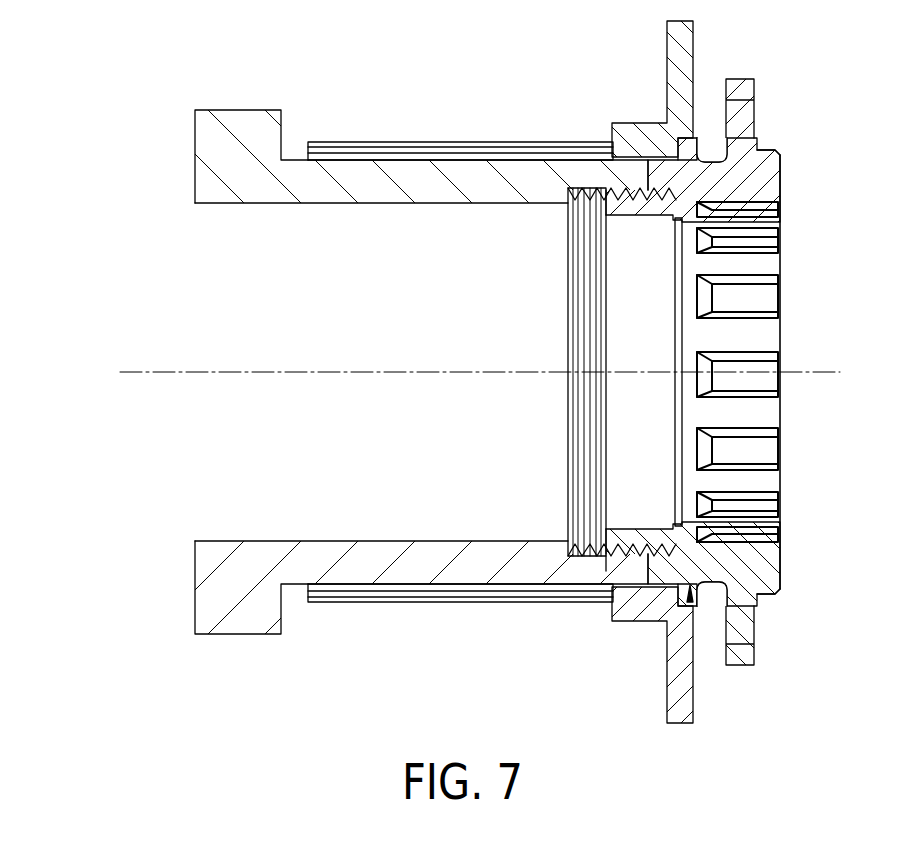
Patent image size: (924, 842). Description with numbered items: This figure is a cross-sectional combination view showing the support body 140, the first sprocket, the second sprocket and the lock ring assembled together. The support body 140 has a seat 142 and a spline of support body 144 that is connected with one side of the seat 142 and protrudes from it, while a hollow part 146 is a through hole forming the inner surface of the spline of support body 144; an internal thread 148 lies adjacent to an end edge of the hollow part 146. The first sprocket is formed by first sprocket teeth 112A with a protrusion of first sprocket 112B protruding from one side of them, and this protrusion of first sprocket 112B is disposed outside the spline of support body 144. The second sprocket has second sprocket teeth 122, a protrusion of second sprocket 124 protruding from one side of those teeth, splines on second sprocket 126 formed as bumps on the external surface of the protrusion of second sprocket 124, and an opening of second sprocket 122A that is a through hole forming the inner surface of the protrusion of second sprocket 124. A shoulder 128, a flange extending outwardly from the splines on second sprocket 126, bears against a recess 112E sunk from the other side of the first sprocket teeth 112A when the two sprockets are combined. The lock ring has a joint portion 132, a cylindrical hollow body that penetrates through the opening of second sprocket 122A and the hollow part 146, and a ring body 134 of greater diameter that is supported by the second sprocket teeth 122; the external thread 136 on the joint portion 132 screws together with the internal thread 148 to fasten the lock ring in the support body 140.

The support body 140 is at (338, 98).
The seat 142 is at (223, 125).
The spline of support body 144 is at (430, 145).
The hollow part 146 is at (226, 443).
The internal thread 148 is at (578, 210).
The second sprocket teeth 122 is at (745, 112).
The opening of second sprocket 122A is at (652, 411).
The protrusion of second sprocket 124 is at (665, 165).
The splines on second sprocket 126 is at (680, 223).
The shoulder 128 is at (692, 140).
The joint portion 132 is at (697, 542).
The ring body 134 is at (780, 155).
The external thread 136 is at (607, 571).
The first sprocket teeth 112A is at (680, 40).
The protrusion of first sprocket 112B is at (630, 610).
The recess 112E is at (700, 583).